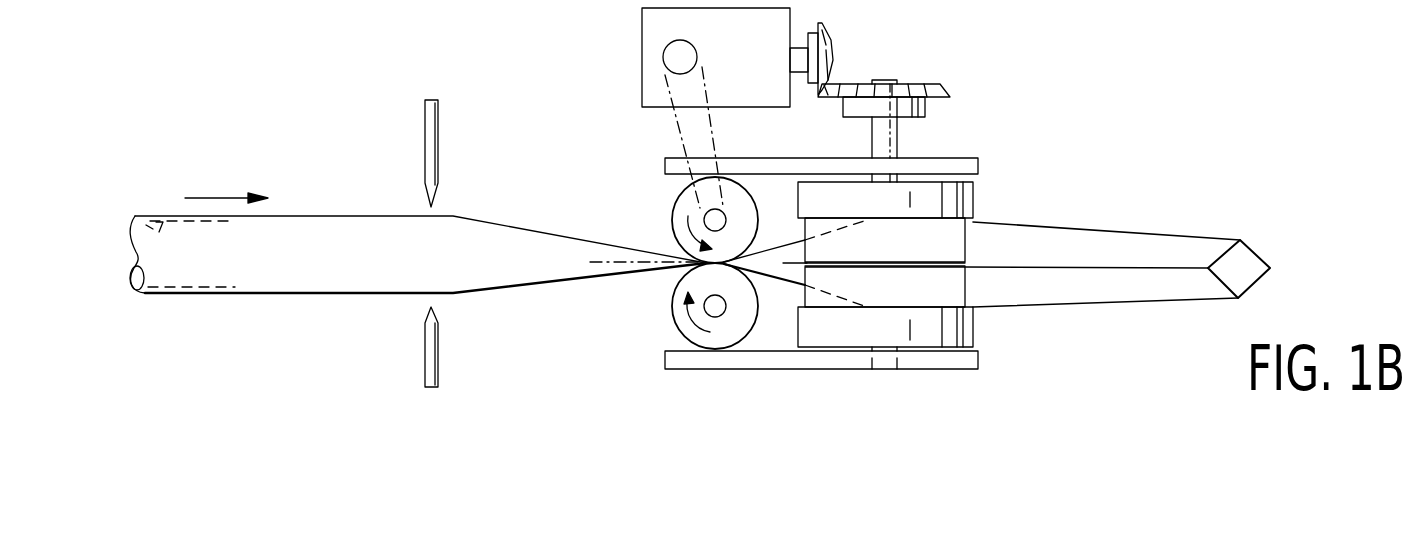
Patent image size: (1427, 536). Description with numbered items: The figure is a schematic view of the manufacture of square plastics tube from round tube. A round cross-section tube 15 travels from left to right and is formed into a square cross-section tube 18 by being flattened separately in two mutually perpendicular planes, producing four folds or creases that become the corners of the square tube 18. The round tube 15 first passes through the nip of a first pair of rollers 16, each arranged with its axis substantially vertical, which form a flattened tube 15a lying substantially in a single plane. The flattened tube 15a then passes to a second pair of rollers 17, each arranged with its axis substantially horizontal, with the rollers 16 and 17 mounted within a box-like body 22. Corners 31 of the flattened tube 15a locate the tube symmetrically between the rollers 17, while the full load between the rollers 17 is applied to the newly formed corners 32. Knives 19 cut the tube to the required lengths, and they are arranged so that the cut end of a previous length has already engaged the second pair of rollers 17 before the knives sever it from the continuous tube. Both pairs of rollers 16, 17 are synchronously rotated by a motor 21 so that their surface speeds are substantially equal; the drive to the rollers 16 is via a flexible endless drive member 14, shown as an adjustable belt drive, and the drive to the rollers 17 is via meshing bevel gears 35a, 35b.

The round cross-section tube 15 is at (133, 200).
The flattened tube 15a is at (783, 267).
The knives 19 is at (437, 160).
The motor 21 is at (642, 23).
The flexible endless drive member 14 is at (660, 115).
The bevel gear 35a is at (828, 38).
The bevel gear 35b is at (921, 84).
The box-like body 22 is at (978, 167).
The first pair of rollers 16 is at (680, 202).
The second pair of rollers 17 is at (978, 200).
The corners of the flattened tube 31 is at (1070, 267).
The newly formed corners 32 is at (1137, 306).
The square cross-section tube 18 is at (1193, 252).